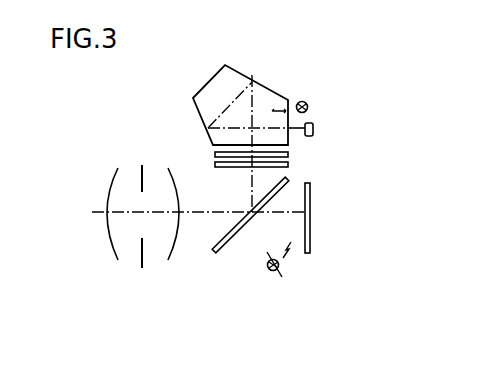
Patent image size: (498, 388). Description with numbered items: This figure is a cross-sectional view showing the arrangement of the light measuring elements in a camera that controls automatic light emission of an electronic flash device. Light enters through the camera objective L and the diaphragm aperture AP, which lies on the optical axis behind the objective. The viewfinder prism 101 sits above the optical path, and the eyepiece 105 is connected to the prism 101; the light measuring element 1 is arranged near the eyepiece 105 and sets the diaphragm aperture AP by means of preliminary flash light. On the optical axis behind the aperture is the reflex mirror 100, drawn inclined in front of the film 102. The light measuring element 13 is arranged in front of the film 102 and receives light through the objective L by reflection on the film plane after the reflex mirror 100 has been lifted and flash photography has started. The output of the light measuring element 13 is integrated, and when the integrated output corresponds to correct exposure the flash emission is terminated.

The prism 101 is at (240, 73).
The light measuring element 1 is at (307, 102).
The eyepiece 105 is at (313, 129).
The film 102 is at (308, 189).
The reflex mirror 100 is at (222, 251).
The light measuring element 13 is at (280, 266).
The diaphragm aperture AP is at (142, 165).
The camera objective L is at (110, 236).